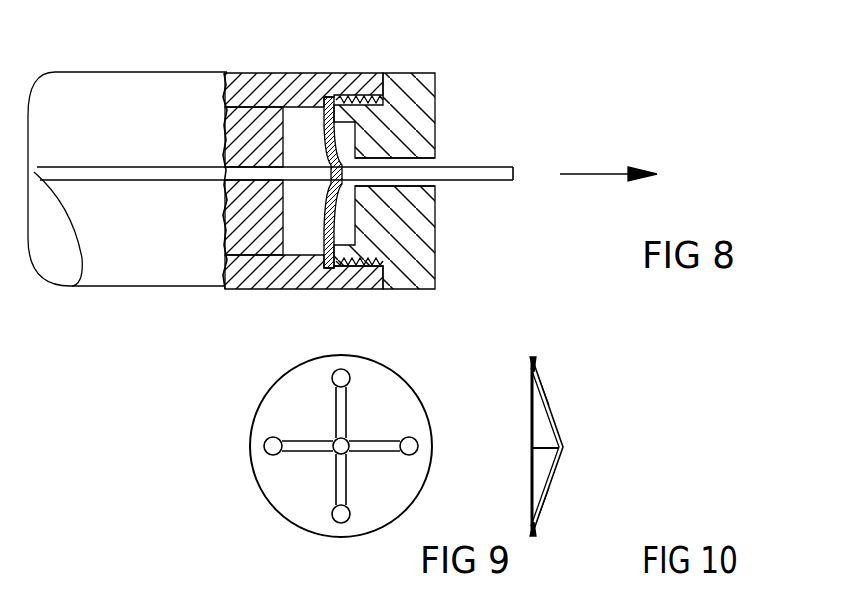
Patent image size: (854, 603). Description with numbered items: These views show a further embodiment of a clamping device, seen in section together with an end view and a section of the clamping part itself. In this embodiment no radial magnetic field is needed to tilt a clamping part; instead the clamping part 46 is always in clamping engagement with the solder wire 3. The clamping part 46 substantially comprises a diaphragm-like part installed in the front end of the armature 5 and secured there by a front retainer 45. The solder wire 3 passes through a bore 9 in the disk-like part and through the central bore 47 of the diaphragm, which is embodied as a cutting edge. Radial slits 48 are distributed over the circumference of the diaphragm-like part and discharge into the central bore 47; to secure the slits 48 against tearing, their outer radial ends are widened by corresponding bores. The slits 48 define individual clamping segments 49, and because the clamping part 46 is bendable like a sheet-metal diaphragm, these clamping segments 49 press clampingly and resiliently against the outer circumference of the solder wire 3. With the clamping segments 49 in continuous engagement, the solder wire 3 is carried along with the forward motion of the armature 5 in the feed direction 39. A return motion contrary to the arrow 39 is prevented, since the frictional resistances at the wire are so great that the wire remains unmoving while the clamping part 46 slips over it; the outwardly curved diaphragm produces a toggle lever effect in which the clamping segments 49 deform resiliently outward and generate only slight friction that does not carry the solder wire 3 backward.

In FIG. 8, the solder wire 3 is at (478, 175).
In FIG. 8, the armature 5 is at (248, 257).
In FIG. 8, the bore 9 is at (433, 203).
In FIG. 8, the feed direction 39 is at (590, 173).
In FIG. 8, the front retainer 45 is at (418, 117).
In FIG. 8, the clamping part 46 is at (316, 122).
In FIG. 9, the clamping part 46 is at (430, 360).
In FIG. 10, the clamping part 46 is at (582, 402).
In FIG. 9, the central bore 47 is at (333, 449).
In FIG. 10, the central bore 47 is at (563, 452).
In FIG. 9, the radial slits 48 is at (386, 449).
In FIG. 9, the clamping segments 49 is at (318, 418).
In FIG. 10, the clamping segments 49 is at (548, 401).